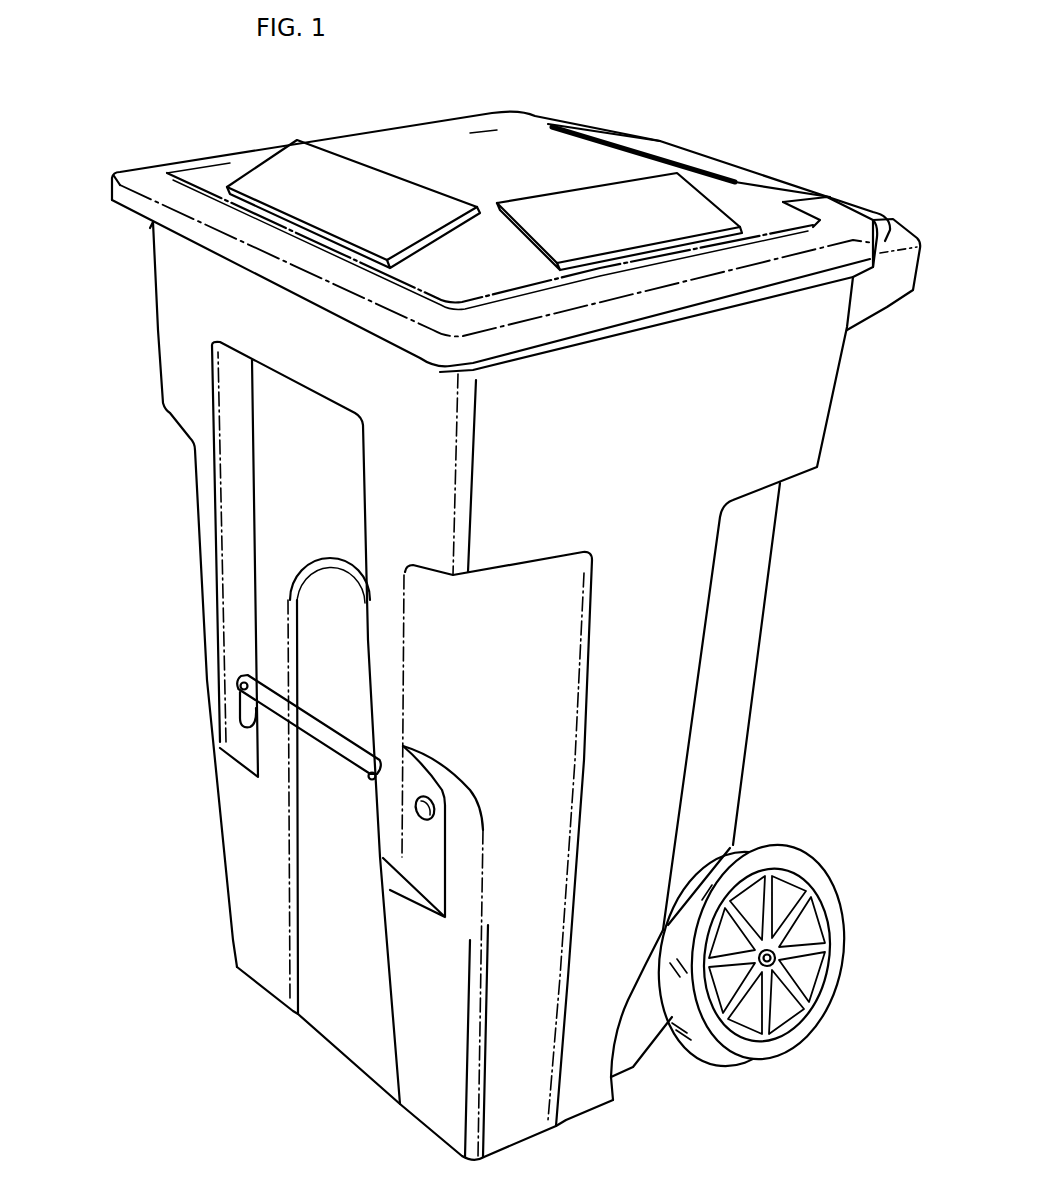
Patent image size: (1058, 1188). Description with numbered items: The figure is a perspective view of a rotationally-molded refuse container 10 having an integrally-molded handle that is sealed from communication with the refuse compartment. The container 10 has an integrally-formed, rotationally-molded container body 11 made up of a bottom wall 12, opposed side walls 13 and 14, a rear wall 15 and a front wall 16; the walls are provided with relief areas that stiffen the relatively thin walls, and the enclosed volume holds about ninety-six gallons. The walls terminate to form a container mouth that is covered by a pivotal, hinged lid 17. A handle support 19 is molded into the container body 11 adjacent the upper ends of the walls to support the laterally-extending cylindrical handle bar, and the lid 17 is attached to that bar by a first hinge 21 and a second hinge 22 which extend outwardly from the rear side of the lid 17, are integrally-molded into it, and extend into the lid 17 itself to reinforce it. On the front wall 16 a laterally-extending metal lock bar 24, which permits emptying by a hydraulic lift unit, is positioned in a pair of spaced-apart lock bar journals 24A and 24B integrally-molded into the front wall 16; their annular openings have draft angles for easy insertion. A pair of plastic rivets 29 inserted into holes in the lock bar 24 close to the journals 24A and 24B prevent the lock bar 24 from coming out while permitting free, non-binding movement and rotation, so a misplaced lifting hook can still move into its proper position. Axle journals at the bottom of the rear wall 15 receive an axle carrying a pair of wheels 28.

The refuse container 10 is at (164, 579).
The container body 11 is at (805, 457).
The bottom wall 12 is at (598, 1108).
The side wall 13 is at (653, 457).
The side wall 14 is at (155, 302).
The rear wall 15 is at (837, 397).
The front wall 16 is at (318, 354).
The lid 17 is at (512, 172).
The handle support 19 is at (890, 287).
The first hinge 21 is at (658, 140).
The second hinge 22 is at (874, 212).
The lock bar 24 is at (287, 712).
The lock bar journal 24A is at (242, 686).
The lock bar journal 24B is at (410, 860).
The wheel 28 is at (767, 1040).
The plastic rivet 29 is at (245, 687).